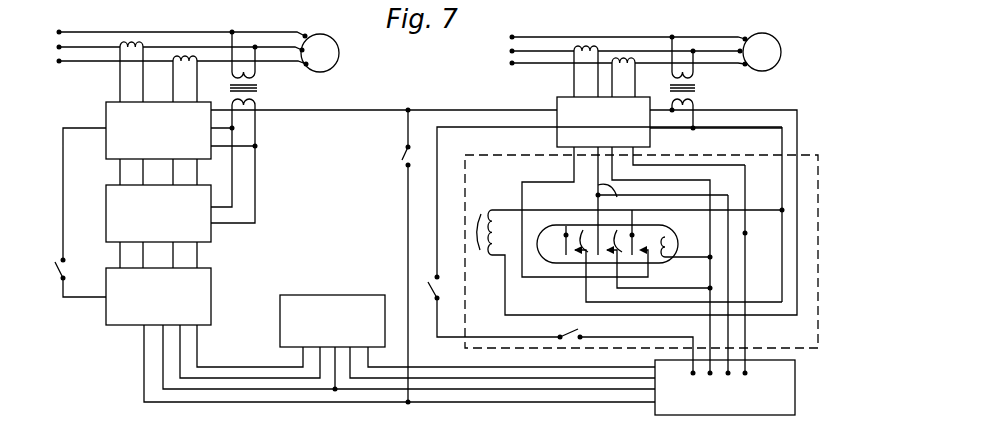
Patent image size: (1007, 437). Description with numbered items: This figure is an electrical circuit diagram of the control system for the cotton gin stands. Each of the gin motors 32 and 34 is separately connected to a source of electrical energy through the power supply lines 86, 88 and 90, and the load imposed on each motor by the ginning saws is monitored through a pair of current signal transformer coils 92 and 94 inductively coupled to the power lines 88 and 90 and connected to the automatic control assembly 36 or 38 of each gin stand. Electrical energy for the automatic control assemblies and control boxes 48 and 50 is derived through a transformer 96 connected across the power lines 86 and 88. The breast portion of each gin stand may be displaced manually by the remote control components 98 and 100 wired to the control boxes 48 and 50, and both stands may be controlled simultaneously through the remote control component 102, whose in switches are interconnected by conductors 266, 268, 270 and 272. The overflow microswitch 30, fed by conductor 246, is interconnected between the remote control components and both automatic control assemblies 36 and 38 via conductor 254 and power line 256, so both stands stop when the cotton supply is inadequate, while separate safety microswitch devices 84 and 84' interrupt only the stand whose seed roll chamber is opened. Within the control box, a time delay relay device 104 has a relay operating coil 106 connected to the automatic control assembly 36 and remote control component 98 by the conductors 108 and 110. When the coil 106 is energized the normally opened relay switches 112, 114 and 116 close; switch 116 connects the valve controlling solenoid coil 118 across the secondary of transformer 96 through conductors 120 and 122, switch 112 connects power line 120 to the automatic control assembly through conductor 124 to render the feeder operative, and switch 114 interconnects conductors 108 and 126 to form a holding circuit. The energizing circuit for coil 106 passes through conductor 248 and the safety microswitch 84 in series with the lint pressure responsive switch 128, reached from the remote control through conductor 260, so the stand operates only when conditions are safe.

The overflow microswitch 30 is at (384, 256).
The gin motor 32 is at (770, 41).
The gin motor 34 is at (213, 66).
The automatic control assembly 36 is at (645, 113).
The automatic control assembly 38 is at (159, 171).
The control box 48 is at (645, 272).
The control box 50 is at (177, 223).
The safety microswitch 84 is at (494, 306).
The safety microswitch 84' is at (72, 290).
The power supply line 86 is at (629, 26).
The power supply line 88 is at (626, 27).
The power supply line 90 is at (605, 74).
The current signal transformer coil 92 is at (595, 50).
The current signal transformer coil 94 is at (636, 50).
The transformer 96 is at (701, 83).
The remote control component 98 is at (725, 398).
The remote control component 100 is at (149, 314).
The remote control component 102 is at (332, 301).
The time delay relay device 104 is at (637, 201).
The relay operating coil 106 is at (675, 231).
The conductor 108 is at (689, 170).
The conductor 110 is at (763, 270).
The relay switch 112 is at (585, 212).
The relay switch 114 is at (640, 248).
The time delay relay switch 116 is at (553, 232).
The valve controlling solenoid coil 118 is at (490, 222).
The conductor 120 is at (752, 214).
The conductor 122 is at (524, 206).
The conductor 124 is at (601, 267).
The conductor 126 is at (690, 279).
The lint pressure responsive switch 128 is at (587, 329).
The conductor 246 is at (417, 94).
The conductor 248 is at (609, 214).
The conductor 254 is at (399, 380).
The power line 256 is at (409, 378).
The conductor 260 is at (638, 346).
The conductor 266 is at (511, 354).
The conductor 268 is at (502, 363).
The conductor 270 is at (250, 346).
The conductor 272 is at (249, 342).